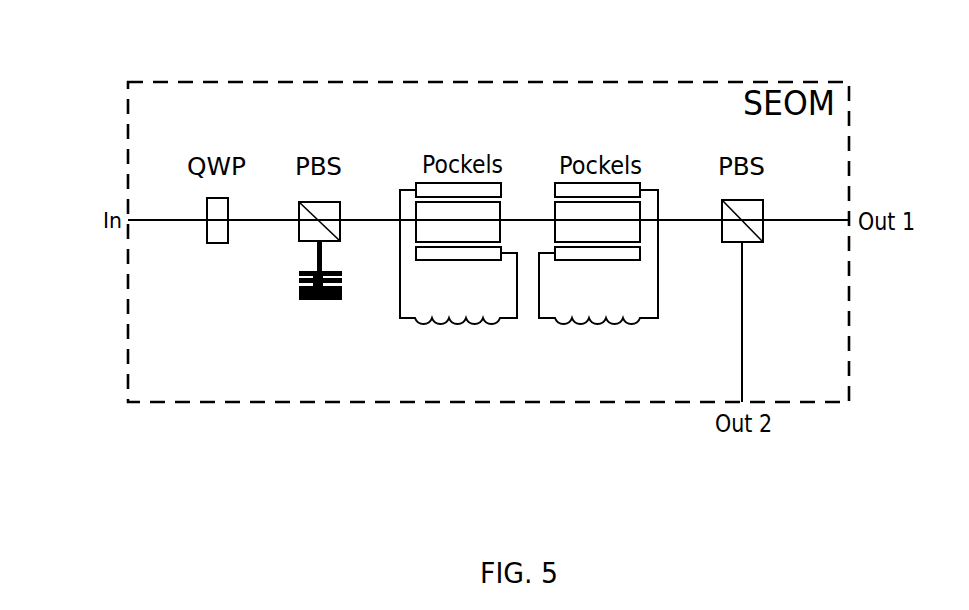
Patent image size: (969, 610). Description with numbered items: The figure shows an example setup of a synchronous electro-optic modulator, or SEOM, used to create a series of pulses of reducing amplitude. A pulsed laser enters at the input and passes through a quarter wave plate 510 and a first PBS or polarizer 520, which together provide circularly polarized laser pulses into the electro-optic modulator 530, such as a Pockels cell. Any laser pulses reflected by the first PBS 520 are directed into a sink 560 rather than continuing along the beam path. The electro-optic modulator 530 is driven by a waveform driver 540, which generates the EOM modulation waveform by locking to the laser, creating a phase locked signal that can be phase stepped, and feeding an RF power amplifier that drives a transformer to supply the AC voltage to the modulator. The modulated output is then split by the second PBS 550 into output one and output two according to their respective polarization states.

The quarter wave plate 510 is at (207, 205).
The first PBS 520 is at (298, 206).
The electro-optic modulator 530 is at (399, 207).
The waveform driver 540 is at (640, 325).
The second PBS 550 is at (763, 233).
The sink 560 is at (299, 292).